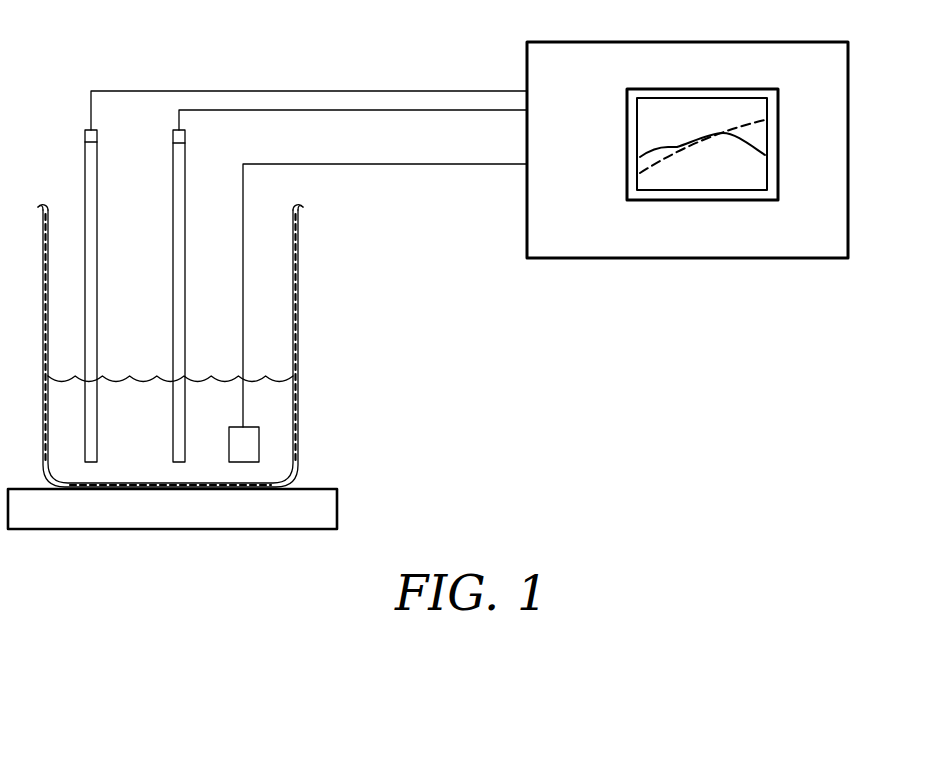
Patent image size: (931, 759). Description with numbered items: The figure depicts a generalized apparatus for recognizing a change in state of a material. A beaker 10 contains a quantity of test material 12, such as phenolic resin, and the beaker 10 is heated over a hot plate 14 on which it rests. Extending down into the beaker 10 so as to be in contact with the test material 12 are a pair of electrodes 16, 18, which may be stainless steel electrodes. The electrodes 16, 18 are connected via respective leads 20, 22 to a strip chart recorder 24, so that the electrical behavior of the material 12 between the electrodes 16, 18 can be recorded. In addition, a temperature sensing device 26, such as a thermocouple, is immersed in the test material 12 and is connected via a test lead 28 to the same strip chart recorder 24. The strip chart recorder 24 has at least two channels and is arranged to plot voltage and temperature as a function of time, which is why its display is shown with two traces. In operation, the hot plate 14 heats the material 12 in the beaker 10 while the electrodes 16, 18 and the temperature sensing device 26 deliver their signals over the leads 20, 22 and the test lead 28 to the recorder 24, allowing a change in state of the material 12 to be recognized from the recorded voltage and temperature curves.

The beaker 10 is at (298, 248).
The test material 12 is at (282, 400).
The hot plate 14 is at (320, 505).
The electrode 16 is at (97, 164).
The electrode 18 is at (185, 165).
The lead 20 is at (425, 91).
The lead 22 is at (428, 110).
The strip chart recorder 24 is at (573, 60).
The temperature sensing device 26 is at (259, 449).
The test lead 28 is at (363, 164).